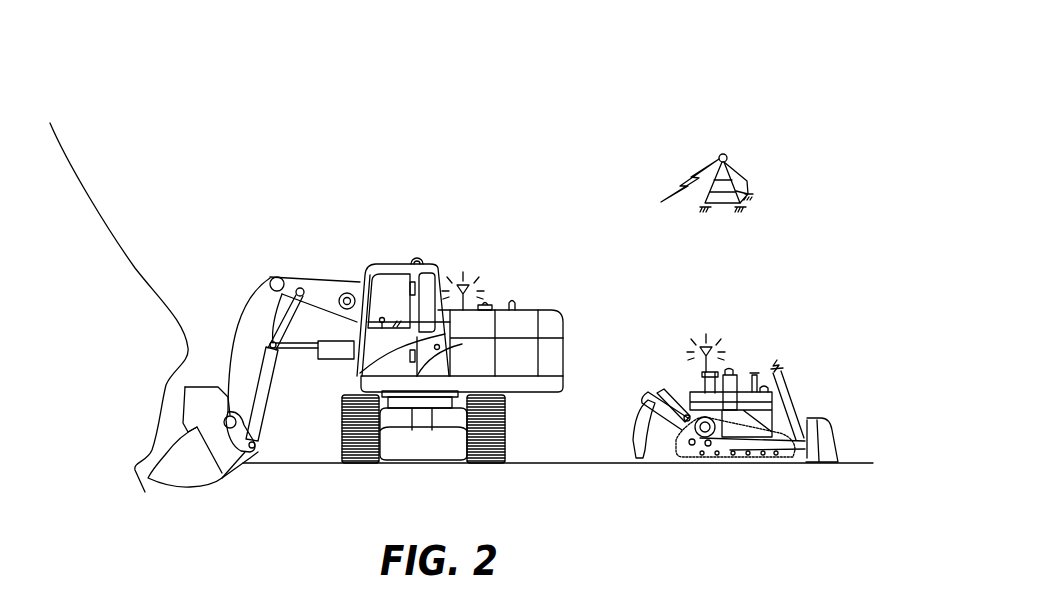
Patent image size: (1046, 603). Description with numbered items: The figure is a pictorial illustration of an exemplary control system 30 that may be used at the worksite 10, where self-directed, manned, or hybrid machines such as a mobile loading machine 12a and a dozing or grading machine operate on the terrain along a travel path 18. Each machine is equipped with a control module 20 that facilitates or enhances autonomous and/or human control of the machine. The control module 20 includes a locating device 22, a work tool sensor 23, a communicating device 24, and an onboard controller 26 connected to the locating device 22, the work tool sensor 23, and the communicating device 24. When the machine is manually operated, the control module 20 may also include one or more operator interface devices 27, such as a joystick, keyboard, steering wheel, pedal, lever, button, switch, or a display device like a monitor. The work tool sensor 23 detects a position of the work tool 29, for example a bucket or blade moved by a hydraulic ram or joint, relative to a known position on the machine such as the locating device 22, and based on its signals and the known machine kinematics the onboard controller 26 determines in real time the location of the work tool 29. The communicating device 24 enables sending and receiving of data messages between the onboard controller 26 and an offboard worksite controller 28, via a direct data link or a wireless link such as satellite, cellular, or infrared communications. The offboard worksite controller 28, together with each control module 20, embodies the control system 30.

The worksite 10 is at (601, 513).
The mobile loading machine 12a is at (552, 321).
The travel path 18 is at (541, 465).
The control module 20 is at (494, 344).
The locating device 22 is at (490, 304).
The work tool sensor 23 is at (207, 377).
The communicating device 24 is at (465, 281).
The onboard controller 26 is at (459, 334).
The operator interface device 27 is at (382, 317).
The offboard worksite controller 28 is at (723, 154).
The work tool 29 is at (178, 478).
The control system 30 is at (756, 58).